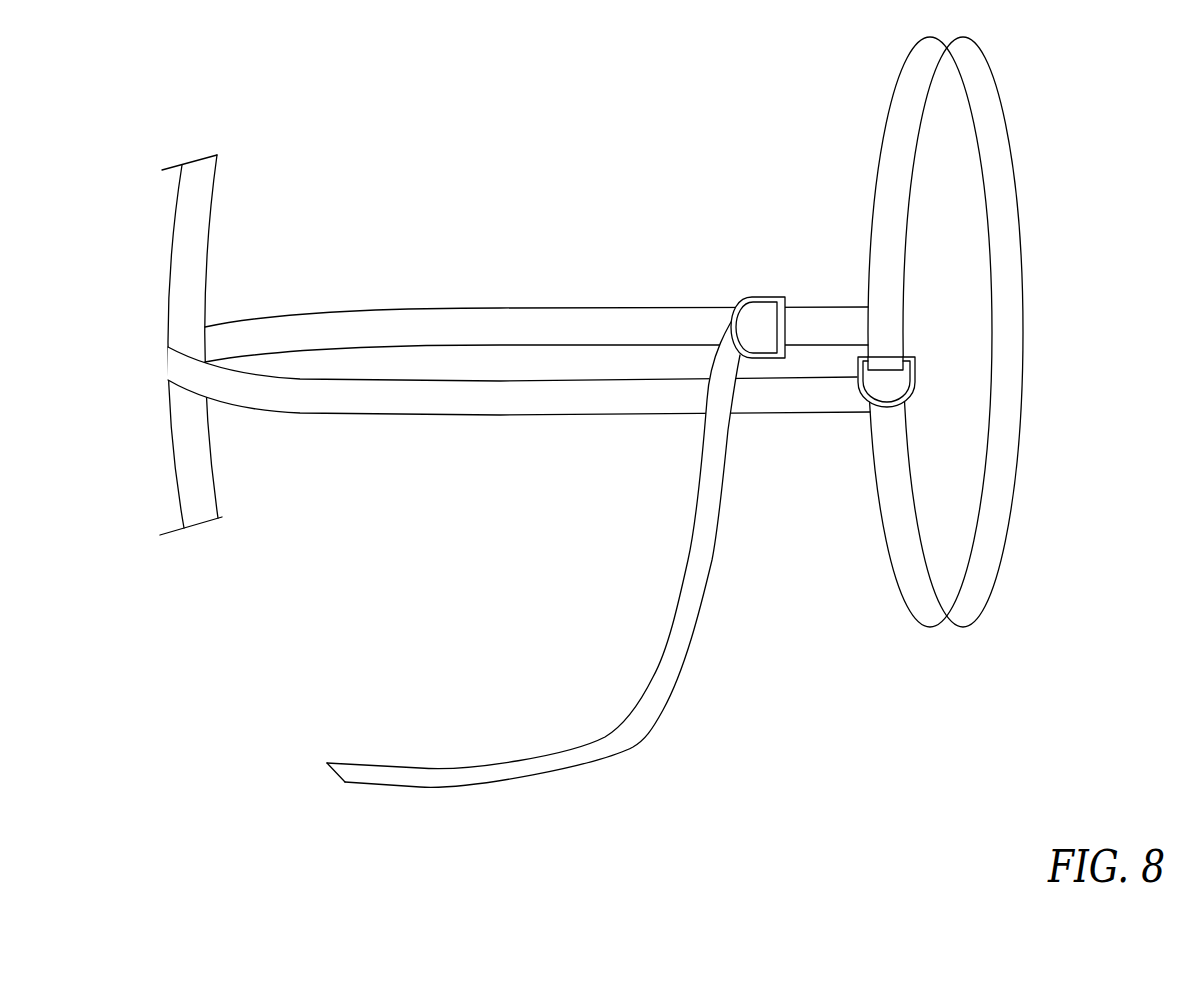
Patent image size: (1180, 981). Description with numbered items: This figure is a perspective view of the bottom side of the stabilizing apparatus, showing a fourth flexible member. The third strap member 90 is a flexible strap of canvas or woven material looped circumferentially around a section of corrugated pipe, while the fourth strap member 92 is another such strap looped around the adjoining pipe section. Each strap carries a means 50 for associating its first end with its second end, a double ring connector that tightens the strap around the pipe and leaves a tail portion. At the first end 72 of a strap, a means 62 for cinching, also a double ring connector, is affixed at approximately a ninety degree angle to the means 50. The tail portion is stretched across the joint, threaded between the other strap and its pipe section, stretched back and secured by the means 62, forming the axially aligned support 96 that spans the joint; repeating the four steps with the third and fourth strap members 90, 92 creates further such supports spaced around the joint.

The means for associating the first end with the second end 50 is at (893, 417).
The means for cinching the tail portion to the first end 62 is at (753, 297).
The first end of the second flexible member 72 is at (905, 152).
The third strap member 90 is at (1020, 232).
The fourth strap member 92 is at (198, 232).
The axially aligned support 96 is at (447, 317).